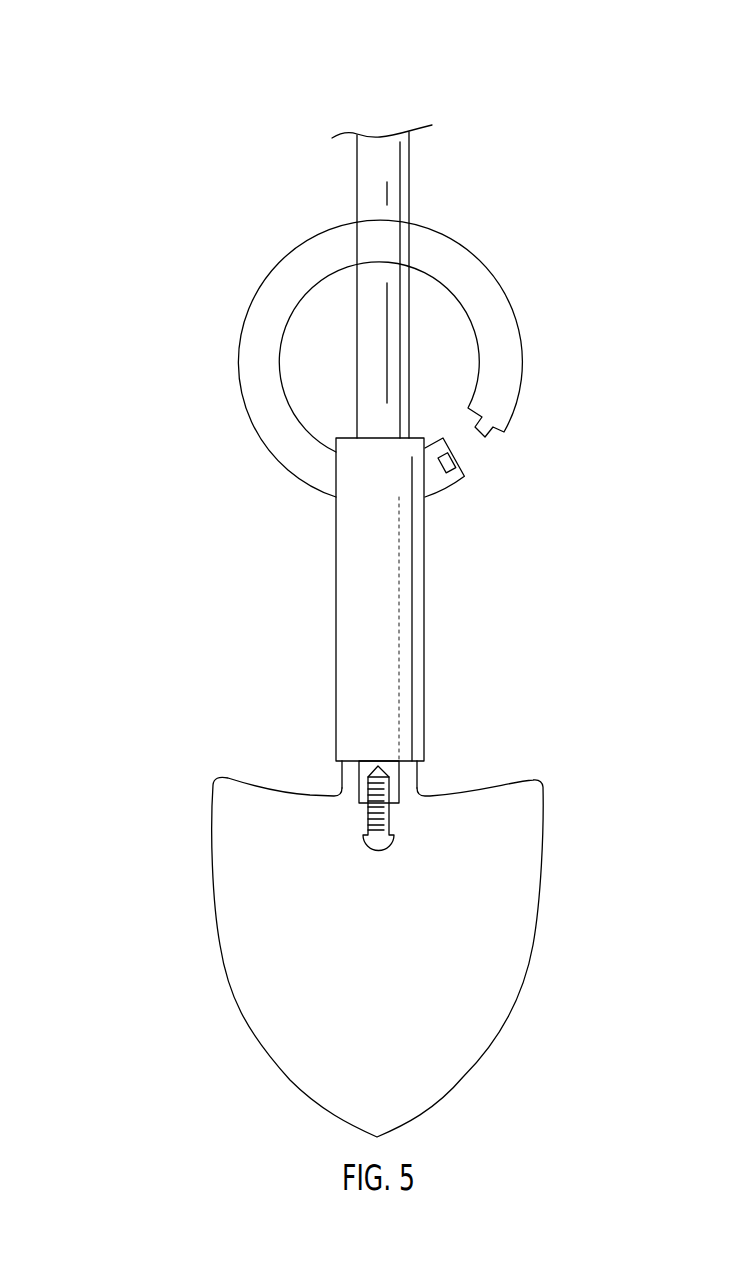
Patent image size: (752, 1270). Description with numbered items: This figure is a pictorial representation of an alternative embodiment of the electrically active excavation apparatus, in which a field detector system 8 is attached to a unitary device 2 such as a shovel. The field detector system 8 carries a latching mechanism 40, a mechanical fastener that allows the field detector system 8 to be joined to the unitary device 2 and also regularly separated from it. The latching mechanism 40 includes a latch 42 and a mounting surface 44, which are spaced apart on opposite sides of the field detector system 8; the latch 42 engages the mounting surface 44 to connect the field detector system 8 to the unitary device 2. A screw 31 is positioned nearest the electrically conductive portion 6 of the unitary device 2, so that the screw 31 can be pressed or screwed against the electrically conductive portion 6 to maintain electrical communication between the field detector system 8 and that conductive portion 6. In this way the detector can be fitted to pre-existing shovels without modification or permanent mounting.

The unitary device 2 is at (566, 153).
The electrically conductive portion 6 is at (248, 972).
The field detector system 8 is at (408, 645).
The screw 31 is at (383, 817).
The latching mechanism 40 is at (282, 495).
The latch 42 is at (224, 254).
The mounting surface 44 is at (486, 497).